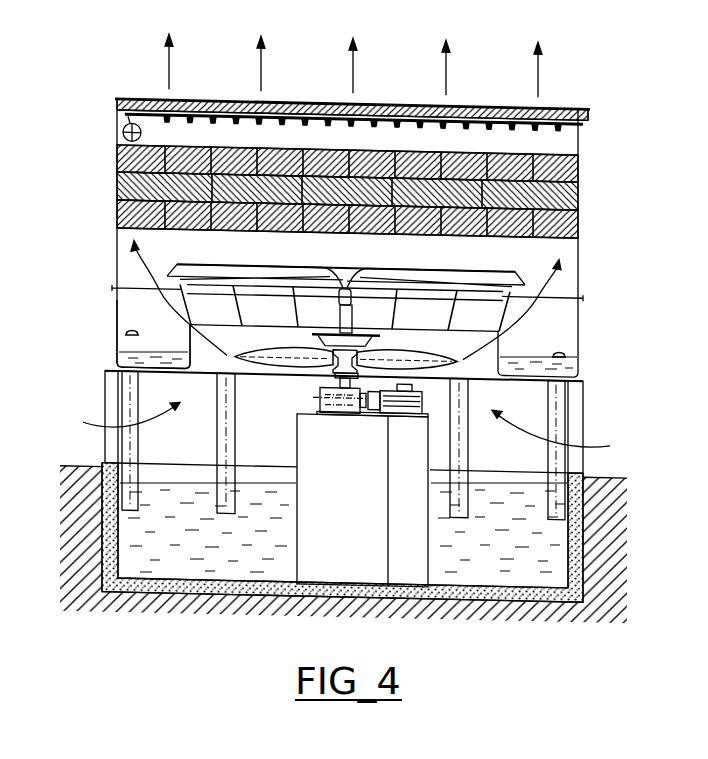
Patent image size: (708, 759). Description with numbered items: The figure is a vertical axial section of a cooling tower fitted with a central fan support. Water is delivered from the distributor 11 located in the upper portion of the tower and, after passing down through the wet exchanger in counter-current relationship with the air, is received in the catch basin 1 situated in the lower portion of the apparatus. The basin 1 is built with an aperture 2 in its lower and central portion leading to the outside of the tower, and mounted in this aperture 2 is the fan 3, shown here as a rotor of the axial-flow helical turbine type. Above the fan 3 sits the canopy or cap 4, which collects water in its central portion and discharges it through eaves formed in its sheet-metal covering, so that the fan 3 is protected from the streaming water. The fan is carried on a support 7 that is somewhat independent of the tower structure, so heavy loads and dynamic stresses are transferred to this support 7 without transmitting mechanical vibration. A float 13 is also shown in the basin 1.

The catch basin 1 is at (117, 353).
The aperture 2 is at (210, 355).
The fan 3 is at (290, 366).
The canopy or cap 4 is at (178, 279).
The support 7 is at (345, 497).
The distributor 11 is at (122, 134).
The float 13 is at (132, 332).